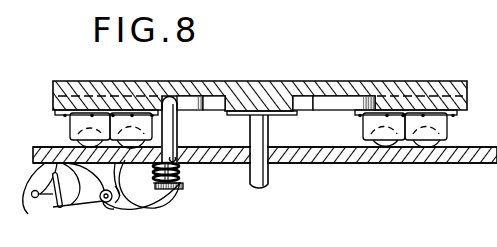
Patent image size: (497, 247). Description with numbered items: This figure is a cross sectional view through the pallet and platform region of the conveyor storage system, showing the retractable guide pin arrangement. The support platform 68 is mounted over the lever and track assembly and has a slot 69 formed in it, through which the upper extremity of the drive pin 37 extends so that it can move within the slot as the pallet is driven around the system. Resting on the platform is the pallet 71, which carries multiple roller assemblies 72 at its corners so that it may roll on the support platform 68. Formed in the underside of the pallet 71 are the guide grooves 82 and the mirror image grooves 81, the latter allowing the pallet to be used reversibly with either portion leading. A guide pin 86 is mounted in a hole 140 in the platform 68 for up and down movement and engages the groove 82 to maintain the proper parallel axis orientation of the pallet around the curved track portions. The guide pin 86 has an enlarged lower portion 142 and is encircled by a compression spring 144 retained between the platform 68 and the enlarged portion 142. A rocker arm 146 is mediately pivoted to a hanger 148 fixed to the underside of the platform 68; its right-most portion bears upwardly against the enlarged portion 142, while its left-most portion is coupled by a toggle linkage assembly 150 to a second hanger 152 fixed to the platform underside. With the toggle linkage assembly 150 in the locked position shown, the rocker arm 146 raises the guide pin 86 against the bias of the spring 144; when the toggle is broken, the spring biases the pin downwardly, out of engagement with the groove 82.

The drive pin 37 is at (250, 176).
The support platform 68 is at (367, 152).
The slot 69 is at (276, 164).
The pallet 71 is at (301, 95).
The roller assemblies 72 is at (442, 121).
The grooves 81 is at (333, 103).
The guide grooves 82 is at (189, 99).
The guide pin 86 is at (173, 133).
The hole 140 is at (180, 168).
The enlarged lower portion 142 is at (183, 190).
The compression spring 144 is at (183, 181).
The rocker arm 146 is at (155, 208).
The hanger 148 is at (112, 208).
The toggle linkage assembly 150 is at (63, 208).
The hanger 152 is at (53, 205).